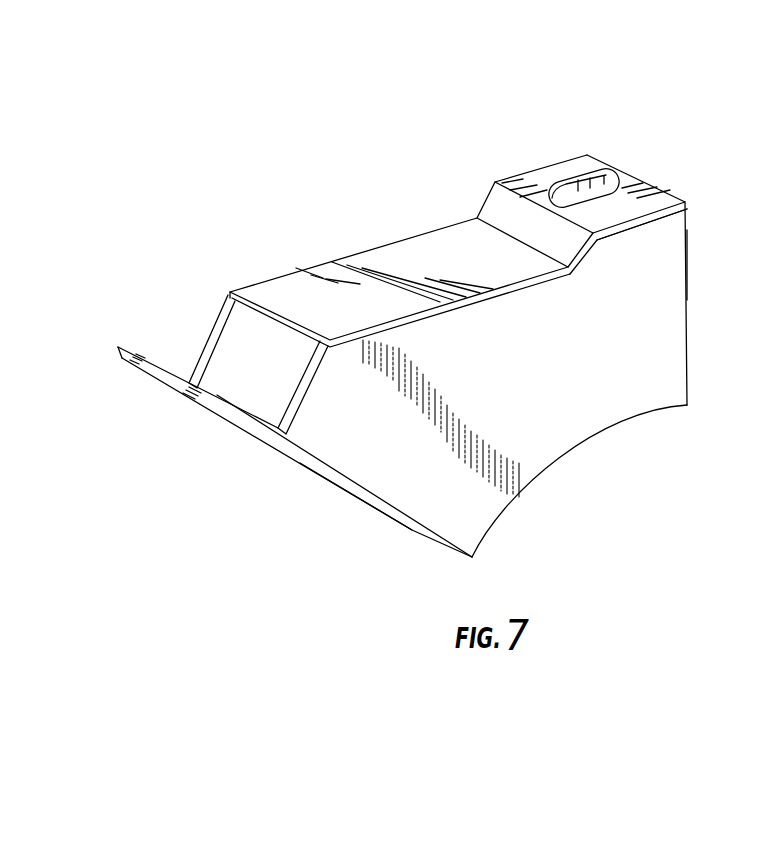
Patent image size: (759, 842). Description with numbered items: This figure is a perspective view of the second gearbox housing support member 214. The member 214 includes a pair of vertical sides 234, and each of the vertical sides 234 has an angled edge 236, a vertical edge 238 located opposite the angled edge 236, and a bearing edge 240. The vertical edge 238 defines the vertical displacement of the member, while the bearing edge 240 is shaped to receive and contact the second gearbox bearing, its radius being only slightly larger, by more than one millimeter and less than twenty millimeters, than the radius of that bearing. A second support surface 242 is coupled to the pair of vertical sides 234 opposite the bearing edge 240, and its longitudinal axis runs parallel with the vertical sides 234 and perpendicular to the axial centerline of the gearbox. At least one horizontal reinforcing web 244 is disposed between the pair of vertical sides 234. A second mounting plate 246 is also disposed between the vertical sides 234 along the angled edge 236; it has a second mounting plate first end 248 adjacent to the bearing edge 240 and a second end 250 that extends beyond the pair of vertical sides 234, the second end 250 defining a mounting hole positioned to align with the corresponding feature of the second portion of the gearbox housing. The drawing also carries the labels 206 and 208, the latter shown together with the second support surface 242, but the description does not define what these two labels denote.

The second gearbox housing support member 214 is at (422, 313).
The holes 206 is at (577, 180).
The tab 208 is at (601, 192).
The second support surface 242 is at (657, 195).
The horizontal reinforcing web 244 is at (400, 258).
The second end 250 is at (148, 362).
The vertical sides 234 is at (660, 362).
The vertical edge 238 is at (685, 268).
The bearing edge 240 is at (578, 440).
The angled edge 236 is at (350, 480).
The second mounting plate 246 is at (308, 462).
The second mounting plate first end 248 is at (407, 536).